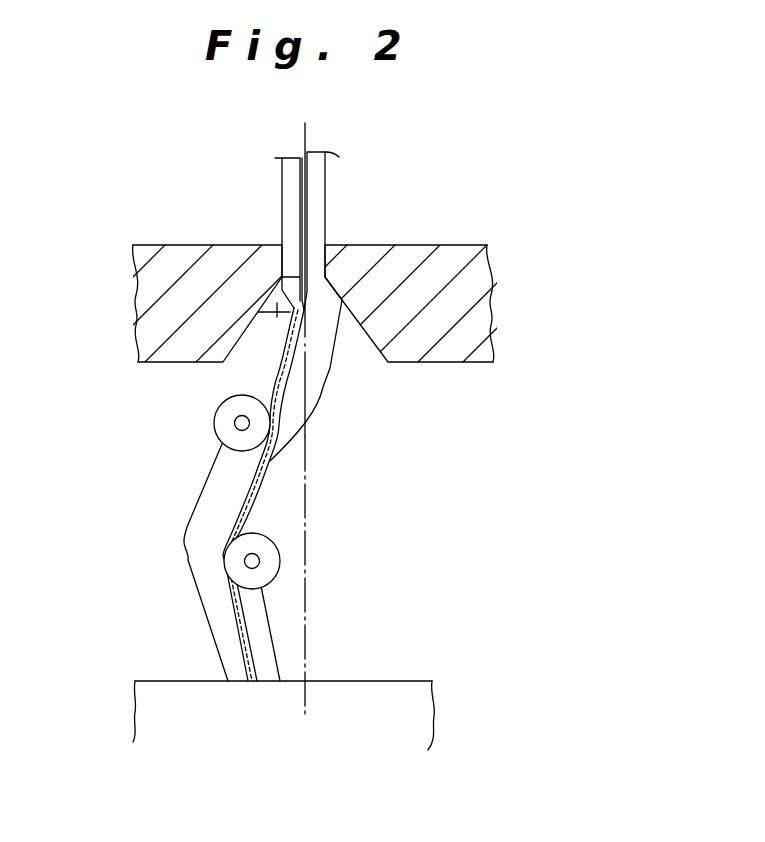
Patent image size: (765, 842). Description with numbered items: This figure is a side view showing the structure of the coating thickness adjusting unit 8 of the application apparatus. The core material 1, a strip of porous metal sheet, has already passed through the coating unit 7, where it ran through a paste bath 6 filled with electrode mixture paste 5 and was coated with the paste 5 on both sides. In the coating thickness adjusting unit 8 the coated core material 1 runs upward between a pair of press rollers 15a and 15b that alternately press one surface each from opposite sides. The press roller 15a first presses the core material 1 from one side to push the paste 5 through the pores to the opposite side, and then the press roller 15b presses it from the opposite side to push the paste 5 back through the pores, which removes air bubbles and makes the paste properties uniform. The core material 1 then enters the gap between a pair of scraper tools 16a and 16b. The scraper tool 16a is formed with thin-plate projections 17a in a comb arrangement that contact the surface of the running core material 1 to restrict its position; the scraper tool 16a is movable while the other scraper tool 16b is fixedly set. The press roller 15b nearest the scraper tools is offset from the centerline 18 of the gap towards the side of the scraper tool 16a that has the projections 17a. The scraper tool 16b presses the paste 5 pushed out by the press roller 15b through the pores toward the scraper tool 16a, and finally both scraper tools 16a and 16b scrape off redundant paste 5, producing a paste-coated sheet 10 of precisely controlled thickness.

The core material 1 is at (302, 183).
The electrode mixture paste 5 is at (293, 207).
The paste bath 6 is at (387, 702).
The coating unit 7 is at (400, 678).
The coating thickness adjusting unit 8 is at (108, 372).
The paste-coated sheet 10 is at (327, 182).
The press roller 15a is at (267, 553).
The press roller 15b is at (225, 428).
The scraper tool 16a is at (173, 270).
The scraper tool 16b is at (422, 268).
The thin-plate projections 17a is at (272, 316).
The centerline 18 is at (306, 478).